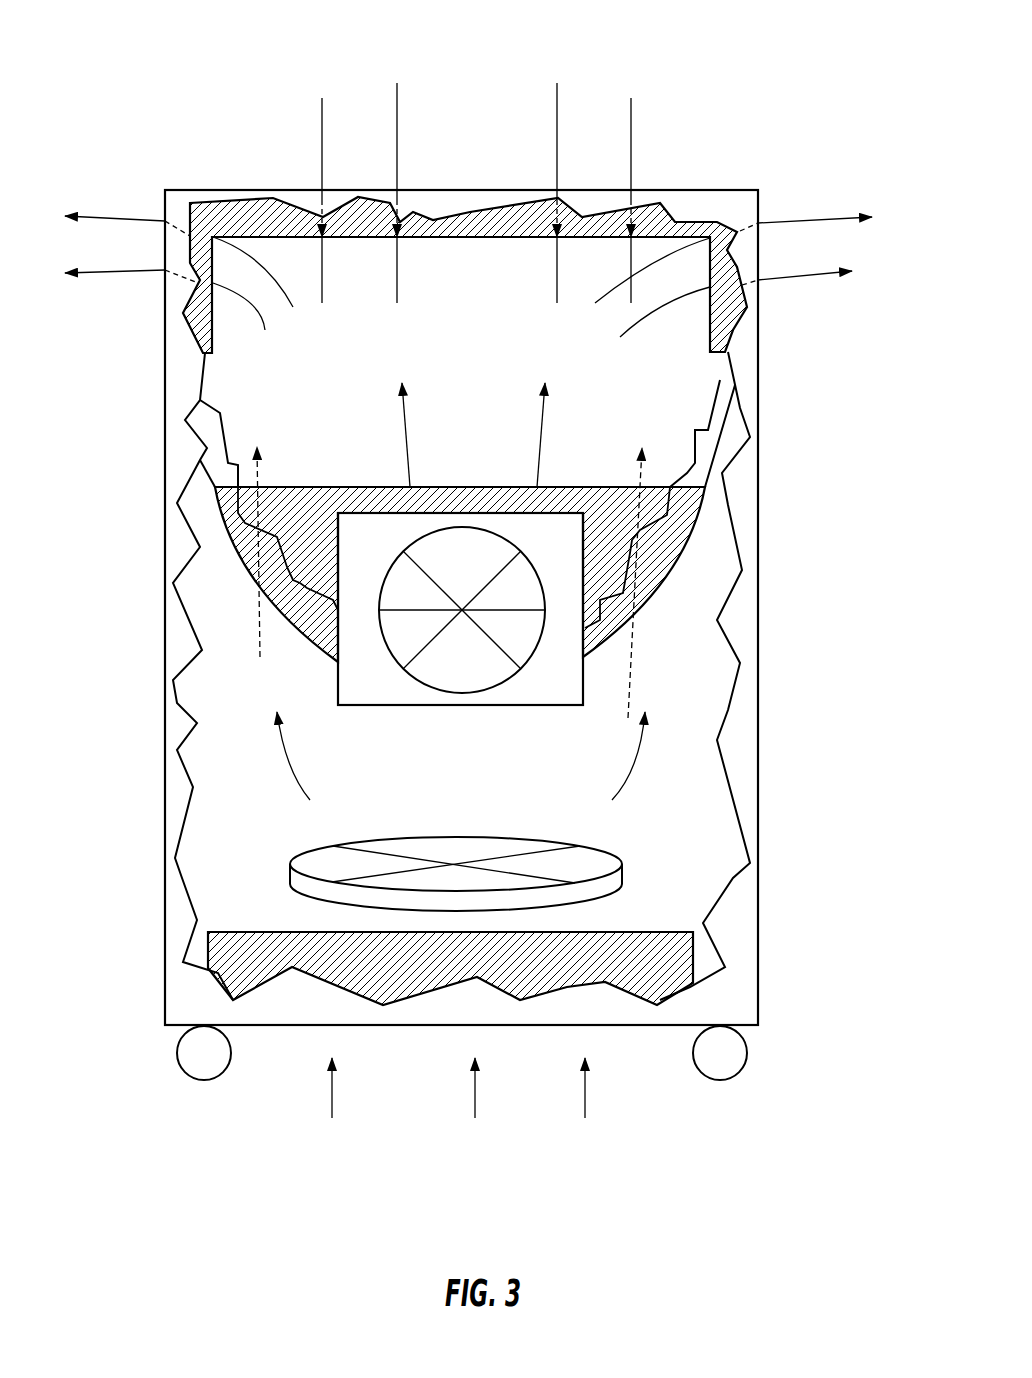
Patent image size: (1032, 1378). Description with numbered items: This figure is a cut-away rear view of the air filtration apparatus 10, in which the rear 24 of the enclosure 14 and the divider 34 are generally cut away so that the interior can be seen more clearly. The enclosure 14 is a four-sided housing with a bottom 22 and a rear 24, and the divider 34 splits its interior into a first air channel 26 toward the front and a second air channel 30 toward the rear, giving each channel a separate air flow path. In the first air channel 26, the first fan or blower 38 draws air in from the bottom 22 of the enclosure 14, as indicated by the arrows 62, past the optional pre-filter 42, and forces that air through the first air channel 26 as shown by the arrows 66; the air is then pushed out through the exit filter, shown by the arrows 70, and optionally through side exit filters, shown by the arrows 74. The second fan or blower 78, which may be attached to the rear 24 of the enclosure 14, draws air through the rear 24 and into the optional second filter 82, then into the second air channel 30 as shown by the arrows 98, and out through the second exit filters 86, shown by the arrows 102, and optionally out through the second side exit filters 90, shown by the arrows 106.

The air filtration apparatus 10 is at (850, 860).
The enclosure 14 is at (760, 593).
The bottom 22 is at (670, 1025).
The rear 24 is at (740, 935).
The first air channel 26 is at (247, 818).
The second air channel 30 is at (712, 382).
The divider 34 is at (700, 472).
The first fan or blower 38 is at (603, 860).
The pre-filter 42 is at (237, 952).
The arrows 62 is at (585, 1093).
The arrows 66 is at (262, 635).
The arrows 70 is at (397, 125).
The arrows 74 is at (115, 273).
The second fan or blower 78 is at (338, 607).
The second filter 82 is at (323, 503).
The second exit filters 86 is at (483, 237).
The second side exit filters 90 is at (213, 330).
The arrows 98 is at (537, 447).
The arrows 102 is at (631, 130).
The arrows 106 is at (128, 217).